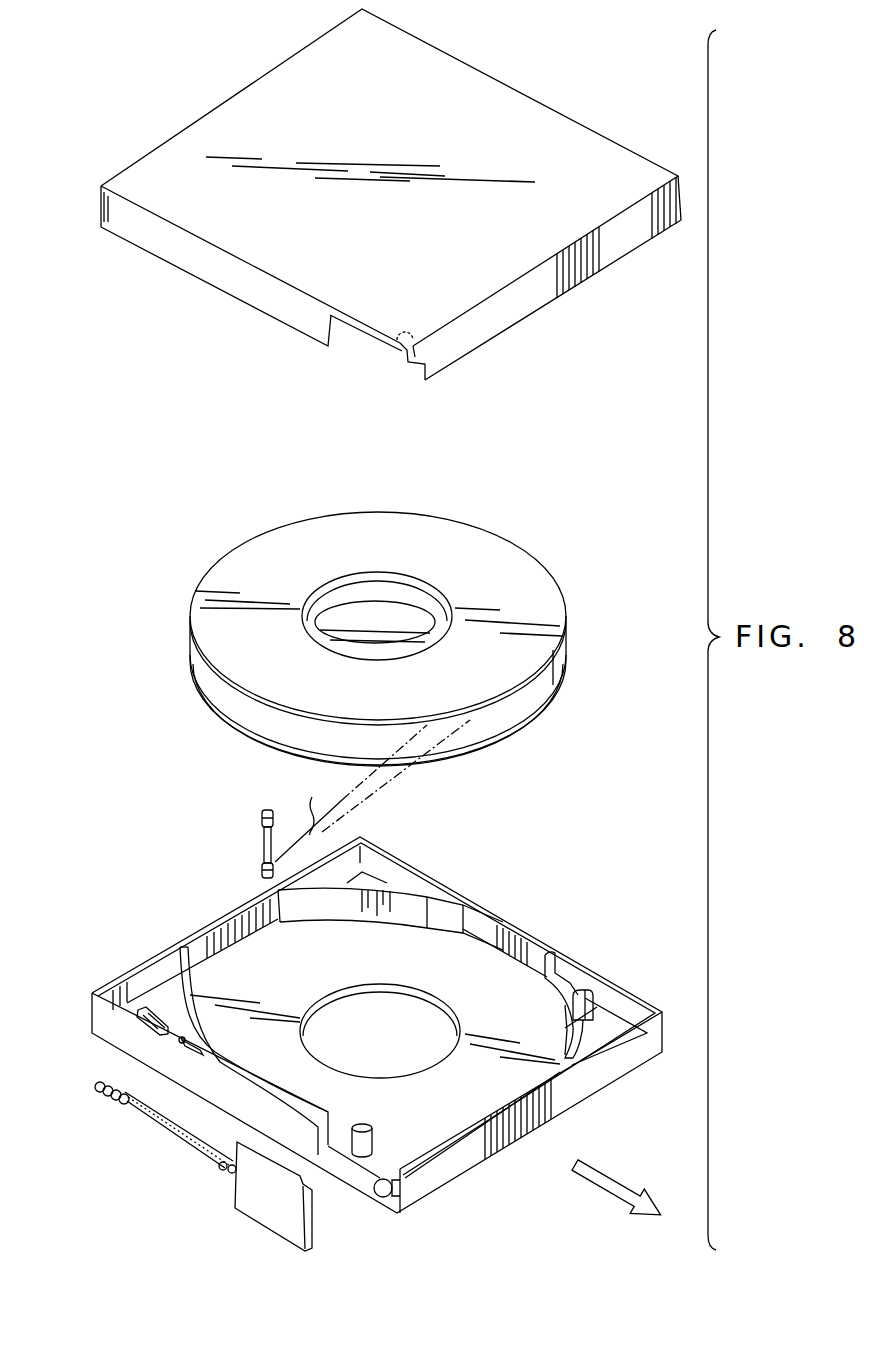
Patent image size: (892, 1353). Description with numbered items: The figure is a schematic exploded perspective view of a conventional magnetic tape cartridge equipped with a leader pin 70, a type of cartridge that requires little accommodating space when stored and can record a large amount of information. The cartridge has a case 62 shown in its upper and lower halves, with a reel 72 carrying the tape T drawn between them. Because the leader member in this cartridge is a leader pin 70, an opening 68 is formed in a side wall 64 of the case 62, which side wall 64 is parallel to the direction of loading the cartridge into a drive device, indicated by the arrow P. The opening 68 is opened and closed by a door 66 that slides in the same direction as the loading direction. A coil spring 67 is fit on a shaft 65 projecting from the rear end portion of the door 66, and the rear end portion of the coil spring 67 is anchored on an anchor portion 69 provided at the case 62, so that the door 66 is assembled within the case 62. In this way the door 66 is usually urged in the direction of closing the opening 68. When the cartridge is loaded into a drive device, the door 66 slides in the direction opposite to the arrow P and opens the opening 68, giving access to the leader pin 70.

The case 62 is at (583, 124).
The side wall 64 is at (223, 276).
The shaft 65 is at (167, 1130).
The door 66 is at (273, 1205).
The coil spring 67 is at (118, 1104).
The opening 68 is at (352, 330).
The anchor portion 69 is at (180, 1037).
The leader pin 70 is at (256, 823).
The tape reel 72 is at (538, 560).
The tape T is at (293, 817).
The arrow P is at (627, 1190).